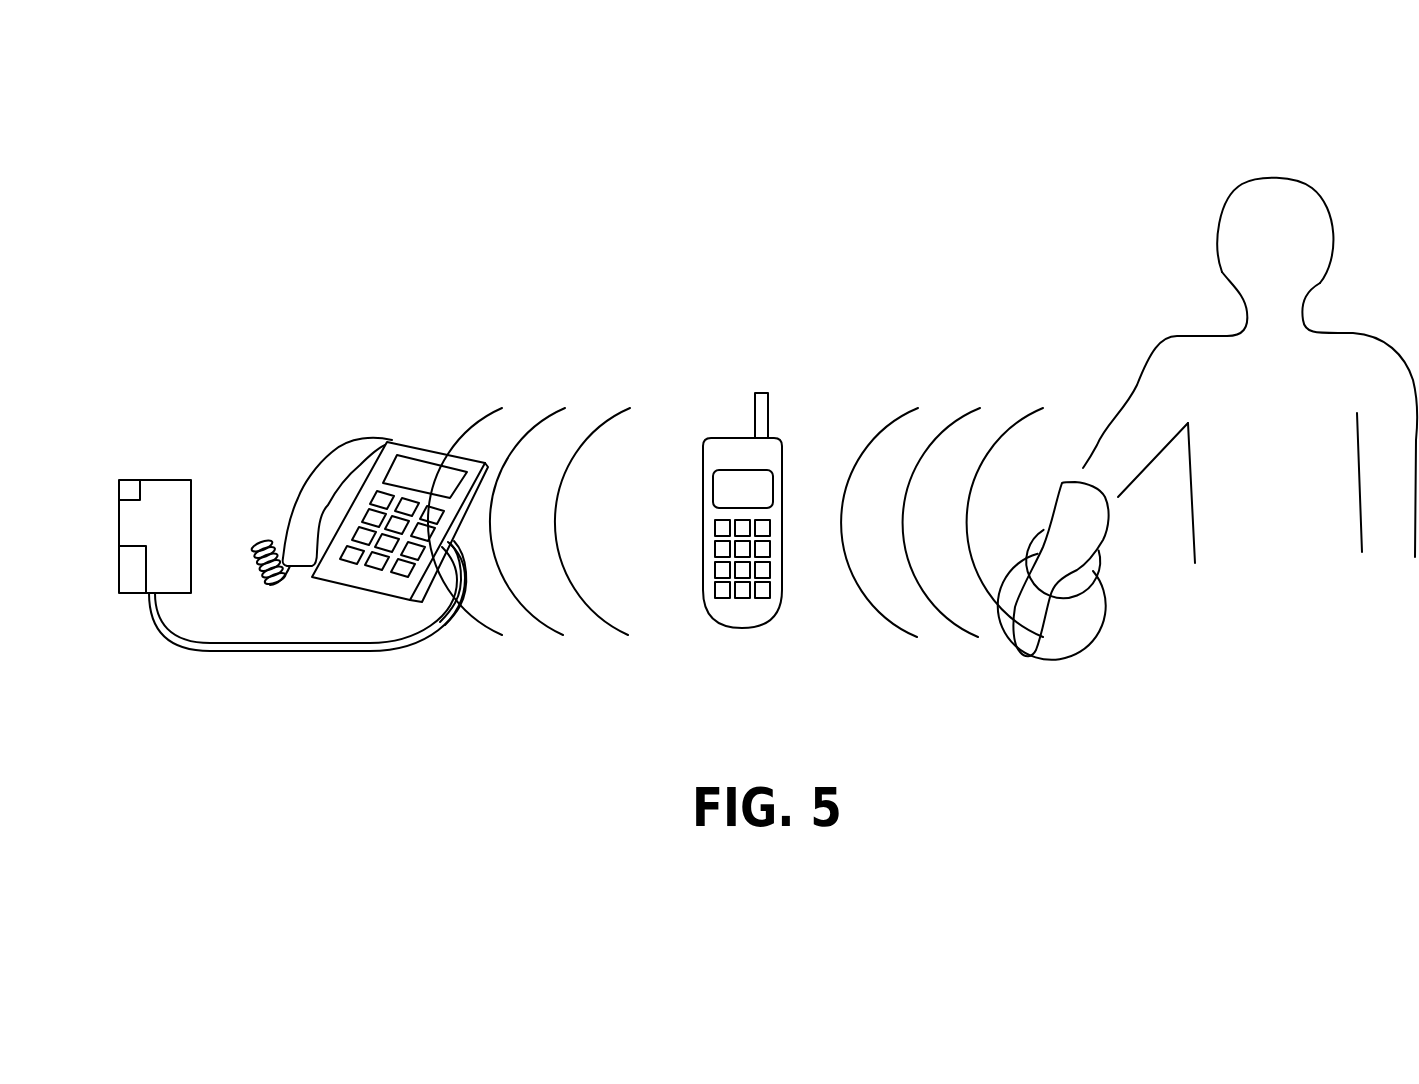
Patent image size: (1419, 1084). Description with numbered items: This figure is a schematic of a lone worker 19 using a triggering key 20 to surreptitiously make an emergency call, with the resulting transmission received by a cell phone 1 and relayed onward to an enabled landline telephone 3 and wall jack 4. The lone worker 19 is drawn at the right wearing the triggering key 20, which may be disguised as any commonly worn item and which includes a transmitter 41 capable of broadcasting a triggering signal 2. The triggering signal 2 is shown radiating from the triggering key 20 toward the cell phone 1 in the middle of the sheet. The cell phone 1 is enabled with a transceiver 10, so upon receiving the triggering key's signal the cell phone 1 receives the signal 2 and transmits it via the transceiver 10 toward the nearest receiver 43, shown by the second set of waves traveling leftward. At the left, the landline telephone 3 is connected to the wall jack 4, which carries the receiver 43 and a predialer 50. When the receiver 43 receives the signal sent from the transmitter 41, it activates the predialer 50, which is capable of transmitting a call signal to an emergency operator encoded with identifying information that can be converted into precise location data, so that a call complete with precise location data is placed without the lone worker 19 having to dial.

The cell phone 1 is at (744, 436).
The triggering signal 2 is at (546, 468).
The landline telephone 3 is at (405, 445).
The wall jack 4 is at (178, 480).
The transceiver 10 is at (746, 609).
The lone worker 19 is at (1218, 267).
The triggering key 20 is at (1117, 555).
The transmitter 41 is at (1100, 558).
The receiver 43 is at (131, 481).
The predialer 50 is at (133, 573).